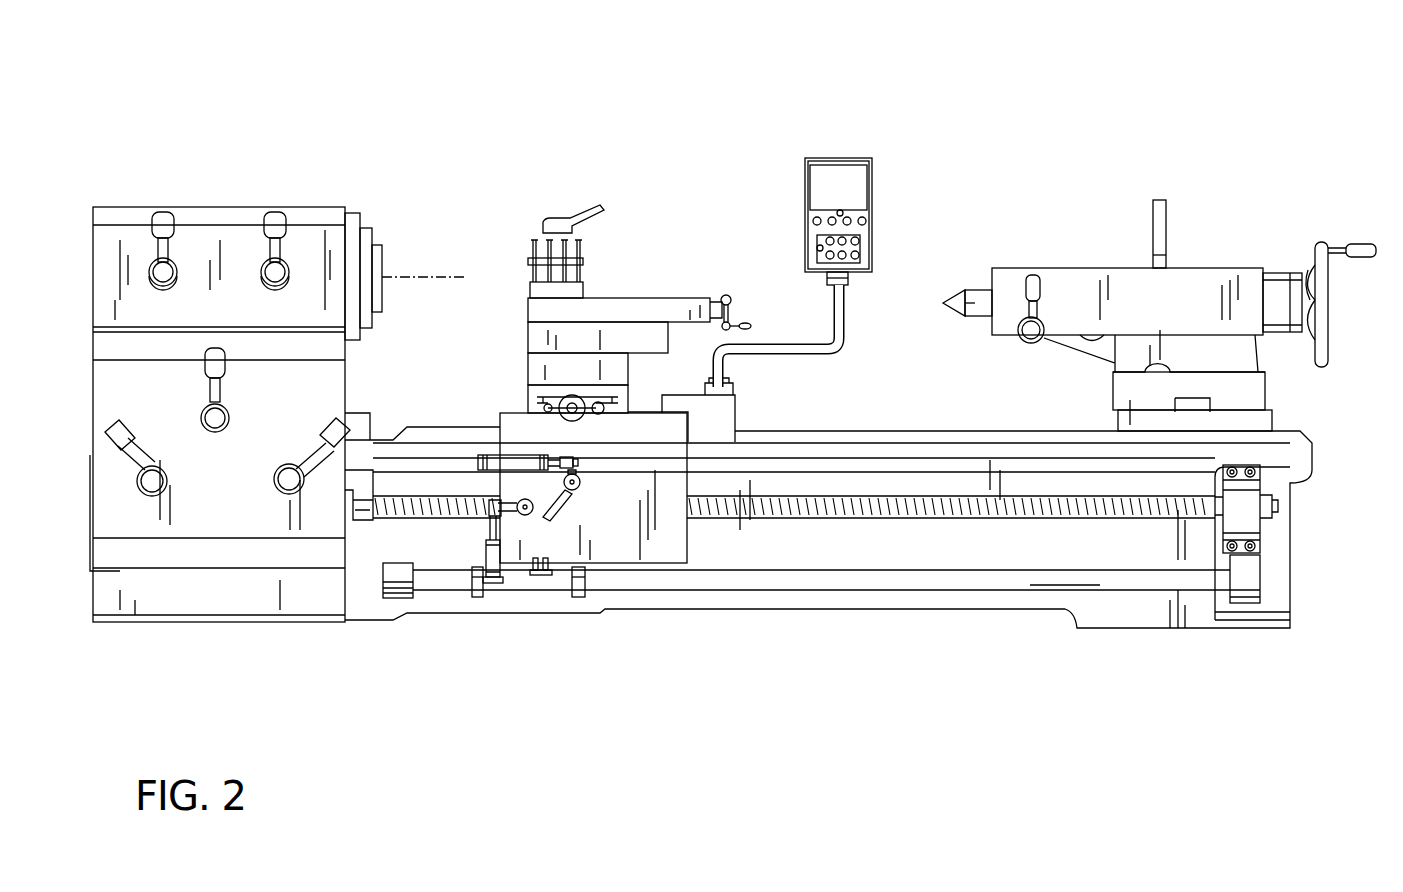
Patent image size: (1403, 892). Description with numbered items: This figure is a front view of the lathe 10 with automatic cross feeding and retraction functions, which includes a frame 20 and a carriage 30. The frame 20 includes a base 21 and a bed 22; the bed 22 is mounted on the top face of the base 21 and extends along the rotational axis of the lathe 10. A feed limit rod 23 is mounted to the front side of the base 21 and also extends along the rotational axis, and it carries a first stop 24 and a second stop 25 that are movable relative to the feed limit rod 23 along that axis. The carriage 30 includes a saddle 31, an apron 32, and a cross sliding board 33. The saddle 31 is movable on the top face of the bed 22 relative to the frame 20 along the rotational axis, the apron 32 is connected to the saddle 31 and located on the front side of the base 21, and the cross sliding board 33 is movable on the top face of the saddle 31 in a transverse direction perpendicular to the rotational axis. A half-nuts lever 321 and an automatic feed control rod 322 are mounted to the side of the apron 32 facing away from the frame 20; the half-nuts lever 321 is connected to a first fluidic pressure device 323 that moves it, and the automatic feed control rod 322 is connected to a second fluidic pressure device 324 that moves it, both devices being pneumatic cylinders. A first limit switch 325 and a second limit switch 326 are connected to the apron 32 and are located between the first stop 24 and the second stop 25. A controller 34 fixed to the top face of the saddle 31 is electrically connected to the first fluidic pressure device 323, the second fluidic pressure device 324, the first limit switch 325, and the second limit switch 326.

The lathe 10 is at (926, 126).
The frame 20 is at (888, 400).
The base 21 is at (880, 552).
The bed 22 is at (963, 431).
The feed limit rod 23 is at (778, 582).
The first stop 24 is at (474, 598).
The second stop 25 is at (578, 600).
The carriage 30 is at (687, 280).
The saddle 31 is at (675, 422).
The apron 32 is at (675, 567).
The cross sliding board 33 is at (540, 390).
The controller 34 is at (827, 178).
The half-nuts lever 321 is at (522, 517).
The automatic feed control rod 322 is at (577, 492).
The first fluidic pressure device 323 is at (496, 590).
The second fluidic pressure device 324 is at (487, 452).
The first limit switch 325 is at (534, 576).
The second limit switch 326 is at (547, 576).